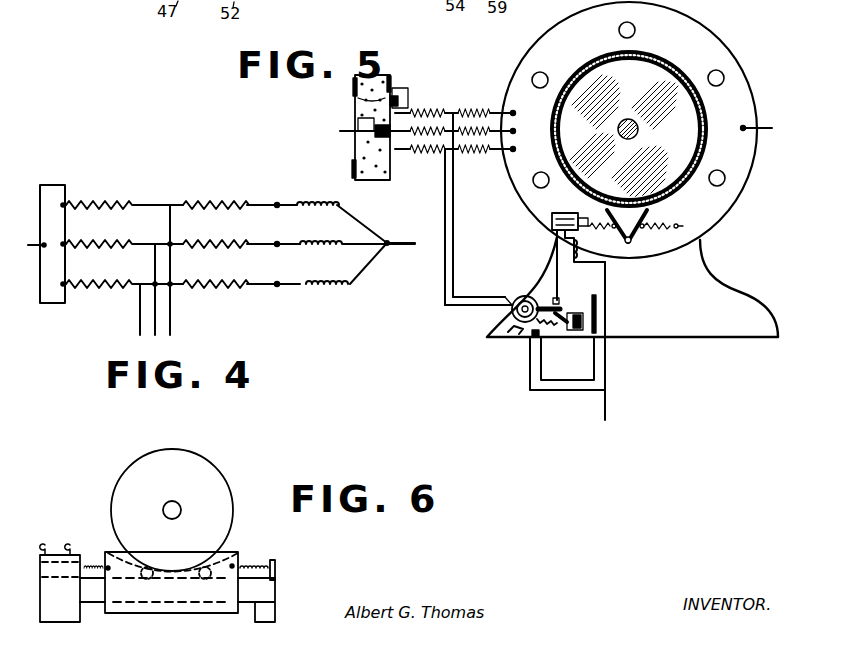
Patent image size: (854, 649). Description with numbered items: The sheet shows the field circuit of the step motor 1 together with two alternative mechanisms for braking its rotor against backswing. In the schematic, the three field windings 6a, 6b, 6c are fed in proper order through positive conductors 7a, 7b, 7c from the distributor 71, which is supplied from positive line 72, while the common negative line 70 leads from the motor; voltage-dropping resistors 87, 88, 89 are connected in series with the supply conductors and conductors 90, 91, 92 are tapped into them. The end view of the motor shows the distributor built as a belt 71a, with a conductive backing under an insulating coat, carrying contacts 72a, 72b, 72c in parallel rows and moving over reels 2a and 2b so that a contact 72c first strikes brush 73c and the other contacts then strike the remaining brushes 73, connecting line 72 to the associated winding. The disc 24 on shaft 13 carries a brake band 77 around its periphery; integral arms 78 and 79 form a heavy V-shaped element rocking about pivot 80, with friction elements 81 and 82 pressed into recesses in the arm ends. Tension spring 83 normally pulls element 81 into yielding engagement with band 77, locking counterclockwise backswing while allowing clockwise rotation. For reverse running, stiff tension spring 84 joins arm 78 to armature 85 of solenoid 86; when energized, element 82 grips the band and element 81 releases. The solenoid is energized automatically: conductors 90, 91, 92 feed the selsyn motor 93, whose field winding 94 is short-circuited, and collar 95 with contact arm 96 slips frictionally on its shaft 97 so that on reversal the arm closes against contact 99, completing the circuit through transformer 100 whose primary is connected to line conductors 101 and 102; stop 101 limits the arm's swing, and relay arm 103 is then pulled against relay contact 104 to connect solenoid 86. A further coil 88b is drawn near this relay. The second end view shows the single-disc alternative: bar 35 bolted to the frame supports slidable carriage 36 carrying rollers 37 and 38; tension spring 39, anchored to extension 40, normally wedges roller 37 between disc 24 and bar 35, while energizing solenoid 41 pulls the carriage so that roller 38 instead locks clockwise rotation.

In FIG. 5, the motor 1 is at (713, 35).
In FIG. 5, the shaft 13 is at (640, 130).
In FIG. 6, the shaft 13 is at (181, 505).
In FIG. 5, the disc 24 is at (645, 72).
In FIG. 6, the disc 24 is at (224, 484).
In FIG. 5, the reel 2a is at (353, 82).
In FIG. 5, the reel 2b is at (353, 178).
In FIG. 4, the field winding 6a is at (318, 203).
In FIG. 4, the field winding 6b is at (320, 242).
In FIG. 4, the field winding 6c is at (320, 282).
In FIG. 4, the positive conductor 7a is at (259, 203).
In FIG. 5, the positive conductor 7a is at (500, 111).
In FIG. 4, the positive conductor 7b is at (260, 242).
In FIG. 5, the positive conductor 7b is at (514, 130).
In FIG. 4, the positive conductor 7c is at (261, 282).
In FIG. 5, the positive conductor 7c is at (493, 149).
In FIG. 6, the bar 35 is at (262, 590).
In FIG. 6, the slidable carriage 36 is at (178, 615).
In FIG. 6, the roller 37 is at (118, 560).
In FIG. 6, the roller 38 is at (215, 560).
In FIG. 6, the tension spring 39 is at (256, 563).
In FIG. 6, the extension 40 is at (278, 572).
In FIG. 6, the solenoid 41 is at (58, 553).
In FIG. 4, the common negative line 70 is at (404, 238).
In FIG. 5, the common negative line 70 is at (772, 128).
In FIG. 4, the distributor 71 is at (55, 305).
In FIG. 5, the distributor 71 is at (372, 137).
In FIG. 5, the belt 71a is at (345, 168).
In FIG. 4, the positive line 72 is at (33, 252).
In FIG. 5, the positive line 72 is at (340, 131).
In FIG. 5, the contact 72a is at (360, 78).
In FIG. 5, the contact 72b is at (395, 90).
In FIG. 5, the contact 72c is at (357, 98).
In FIG. 5, the contact 73 is at (358, 121).
In FIG. 5, the brush 73c is at (392, 129).
In FIG. 5, the brake band 77 is at (600, 60).
In FIG. 5, the arm 78 is at (622, 250).
In FIG. 5, the arm 79 is at (640, 236).
In FIG. 5, the pivot 80 is at (632, 246).
In FIG. 5, the friction element 81 is at (606, 212).
In FIG. 5, the friction element 82 is at (655, 212).
In FIG. 5, the tension spring 83 is at (652, 232).
In FIG. 5, the stiff tension spring 84 is at (598, 233).
In FIG. 5, the armature 85 is at (602, 239).
In FIG. 5, the solenoid 86 is at (552, 213).
In FIG. 4, the resistor 87 is at (215, 205).
In FIG. 5, the resistor 87 is at (470, 113).
In FIG. 4, the resistor 88 is at (217, 242).
In FIG. 5, the resistor 88 is at (422, 132).
In FIG. 5, the solenoid 88b is at (577, 332).
In FIG. 4, the resistor 89 is at (217, 282).
In FIG. 5, the resistor 89 is at (470, 152).
In FIG. 4, the conductor 90 is at (172, 305).
In FIG. 5, the conductor 90 is at (455, 222).
In FIG. 4, the conductor 91 is at (157, 328).
In FIG. 5, the conductor 91 is at (447, 250).
In FIG. 4, the conductor 92 is at (138, 318).
In FIG. 5, the conductor 92 is at (445, 282).
In FIG. 5, the selsyn motor 93 is at (512, 307).
In FIG. 5, the field winding 94 is at (510, 338).
In FIG. 5, the collar 95 is at (527, 296).
In FIG. 5, the contact arm 96 is at (552, 304).
In FIG. 5, the motor shaft 97 is at (515, 318).
In FIG. 5, the contact 99 is at (562, 315).
In FIG. 5, the transformer 100 is at (535, 338).
In FIG. 5, the stop / A.C. line conductor 101 is at (645, 407).
In FIG. 5, the A.C. line conductor 102 is at (603, 400).
In FIG. 5, the relay arm 103 is at (598, 318).
In FIG. 5, the relay contact 104 is at (590, 301).